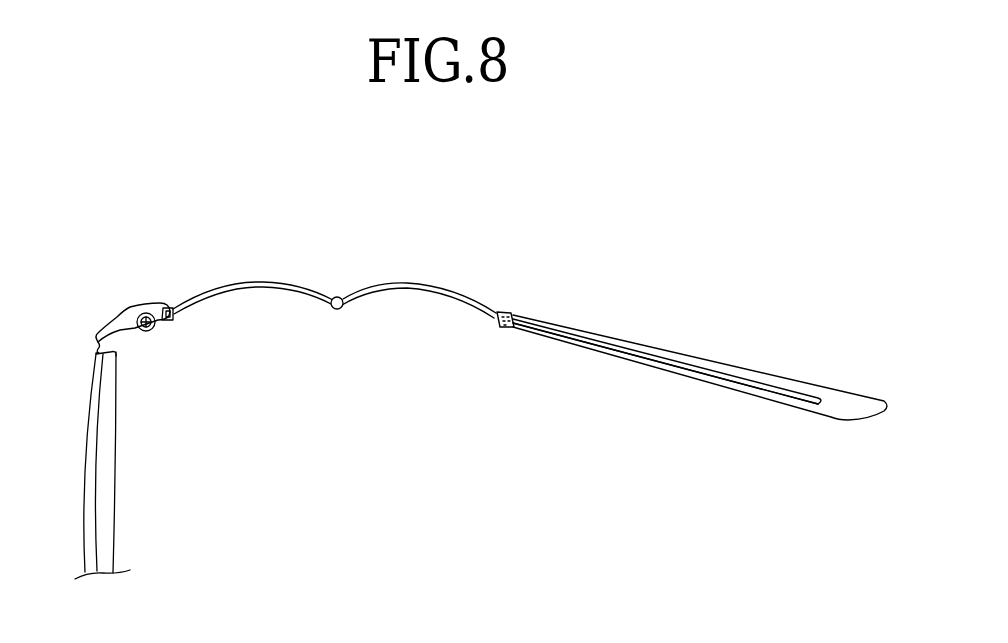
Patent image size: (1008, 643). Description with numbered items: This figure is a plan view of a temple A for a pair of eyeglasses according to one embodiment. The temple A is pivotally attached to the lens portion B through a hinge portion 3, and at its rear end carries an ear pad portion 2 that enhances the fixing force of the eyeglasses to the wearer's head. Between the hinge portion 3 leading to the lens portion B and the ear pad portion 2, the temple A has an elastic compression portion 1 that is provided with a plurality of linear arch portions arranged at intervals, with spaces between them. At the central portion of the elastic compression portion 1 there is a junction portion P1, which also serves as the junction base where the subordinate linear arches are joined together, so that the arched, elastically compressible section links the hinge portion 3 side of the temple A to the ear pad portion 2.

The temple A is at (612, 190).
The elastic compression portion 1 is at (499, 237).
The ear pad portion 2 is at (707, 360).
The hinge portion 3 is at (150, 330).
The junction portion P1 is at (331, 311).
The lens portion B is at (105, 478).